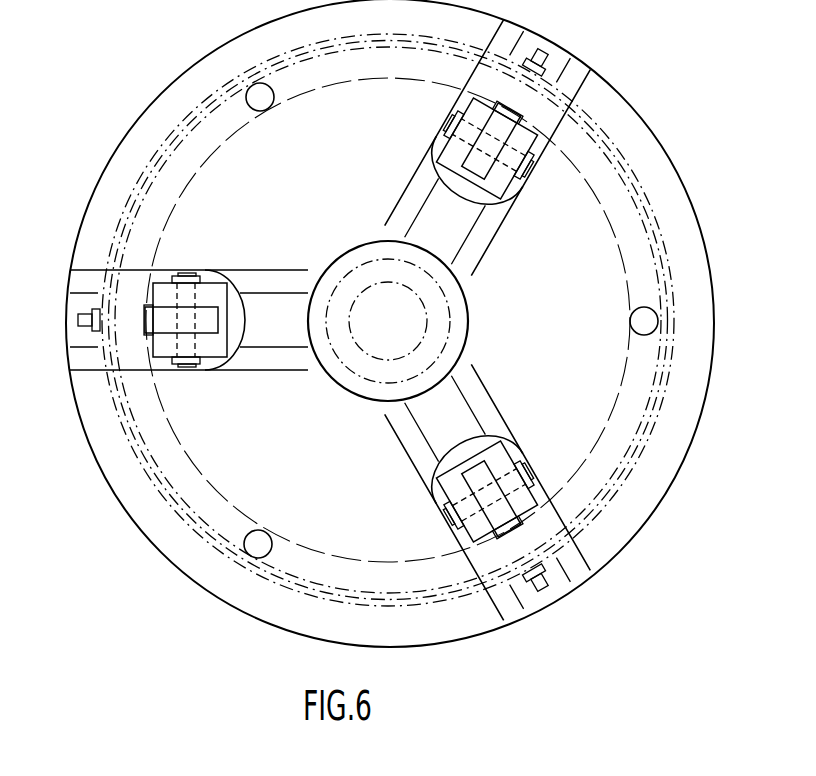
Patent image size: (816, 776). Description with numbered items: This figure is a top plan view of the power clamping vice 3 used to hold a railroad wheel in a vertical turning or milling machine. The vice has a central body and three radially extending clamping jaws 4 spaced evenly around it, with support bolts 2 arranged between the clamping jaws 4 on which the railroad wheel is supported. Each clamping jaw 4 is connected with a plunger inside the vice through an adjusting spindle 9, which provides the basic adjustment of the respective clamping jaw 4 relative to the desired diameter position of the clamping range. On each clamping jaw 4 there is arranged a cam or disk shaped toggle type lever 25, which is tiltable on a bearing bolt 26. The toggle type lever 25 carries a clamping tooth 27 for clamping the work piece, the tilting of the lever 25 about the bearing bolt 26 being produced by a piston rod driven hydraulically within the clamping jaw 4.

The support bolt 2 is at (256, 545).
The power clamping vice 3 is at (183, 550).
The clamping jaw 4 is at (550, 532).
The adjusting spindle 9 is at (543, 585).
The toggle type lever 25 is at (473, 480).
The bearing bolt 26 is at (448, 523).
The clamping tooth 27 is at (552, 500).